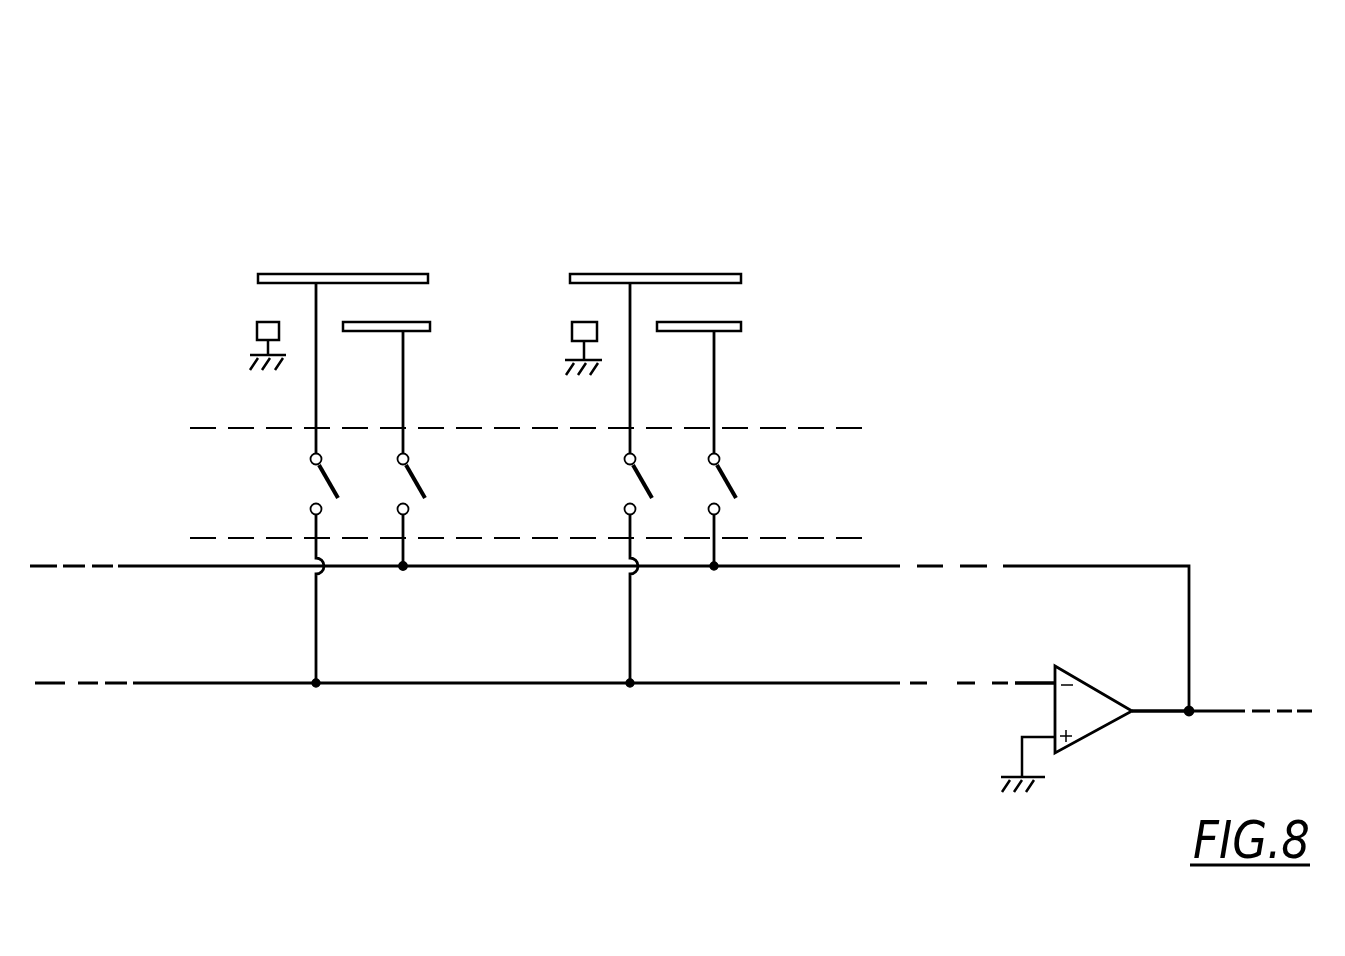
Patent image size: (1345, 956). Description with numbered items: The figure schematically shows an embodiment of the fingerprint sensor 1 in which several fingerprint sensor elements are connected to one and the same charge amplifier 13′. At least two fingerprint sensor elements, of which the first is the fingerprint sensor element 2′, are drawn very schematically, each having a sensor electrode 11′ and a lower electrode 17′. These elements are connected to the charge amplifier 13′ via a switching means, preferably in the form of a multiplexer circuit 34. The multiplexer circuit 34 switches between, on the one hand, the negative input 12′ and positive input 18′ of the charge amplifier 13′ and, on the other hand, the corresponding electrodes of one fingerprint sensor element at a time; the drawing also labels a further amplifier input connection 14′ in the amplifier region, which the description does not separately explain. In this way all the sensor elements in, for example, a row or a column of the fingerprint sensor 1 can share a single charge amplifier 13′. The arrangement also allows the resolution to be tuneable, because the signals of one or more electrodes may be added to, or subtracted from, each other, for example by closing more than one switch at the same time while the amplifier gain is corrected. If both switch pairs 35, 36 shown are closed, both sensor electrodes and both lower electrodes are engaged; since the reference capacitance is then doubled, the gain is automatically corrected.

The fingerprint sensor 1 is at (433, 97).
The fingerprint sensor element 2′ is at (386, 299).
The sensor electrode 11′ is at (391, 274).
The lower electrode 17′ is at (427, 321).
The negative input 12′ is at (1032, 682).
The non-inverting input of amplifier 14′ is at (1043, 736).
The charge amplifier 13′ is at (1003, 735).
The positive input 18′ is at (1160, 711).
The multiplexer circuit 34 is at (760, 498).
The switch pair 35 is at (297, 490).
The switch pair 36 is at (611, 491).